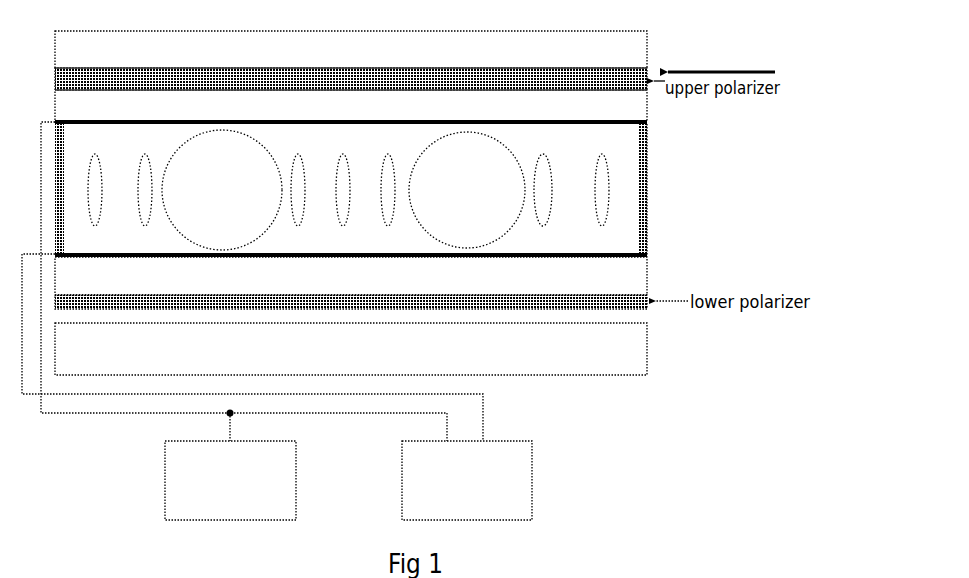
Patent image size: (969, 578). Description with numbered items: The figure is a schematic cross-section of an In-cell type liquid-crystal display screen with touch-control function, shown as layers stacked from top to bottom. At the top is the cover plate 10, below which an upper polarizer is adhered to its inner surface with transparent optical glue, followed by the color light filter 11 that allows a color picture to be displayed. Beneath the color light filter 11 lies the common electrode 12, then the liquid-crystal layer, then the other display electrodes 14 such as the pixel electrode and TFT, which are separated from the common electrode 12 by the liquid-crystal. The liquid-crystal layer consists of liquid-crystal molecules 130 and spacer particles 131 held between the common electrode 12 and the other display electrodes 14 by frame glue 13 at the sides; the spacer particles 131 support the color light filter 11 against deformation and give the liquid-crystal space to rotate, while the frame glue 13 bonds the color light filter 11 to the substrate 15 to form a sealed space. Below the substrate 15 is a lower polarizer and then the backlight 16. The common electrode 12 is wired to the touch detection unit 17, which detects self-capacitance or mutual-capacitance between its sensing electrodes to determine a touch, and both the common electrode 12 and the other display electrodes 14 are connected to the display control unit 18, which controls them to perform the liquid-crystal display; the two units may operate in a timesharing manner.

The cover plate 10 is at (668, 47).
The color light filter 11 is at (654, 108).
The common electrode 12 is at (652, 128).
The frame glue 13 is at (653, 185).
The liquid-crystal molecules 130 is at (614, 190).
The spacer particles 131 is at (530, 214).
The other display electrodes 14 is at (656, 255).
The substrate 15 is at (656, 277).
The backlight 16 is at (656, 349).
The touch detection unit 17 is at (165, 493).
The display control unit 18 is at (533, 483).